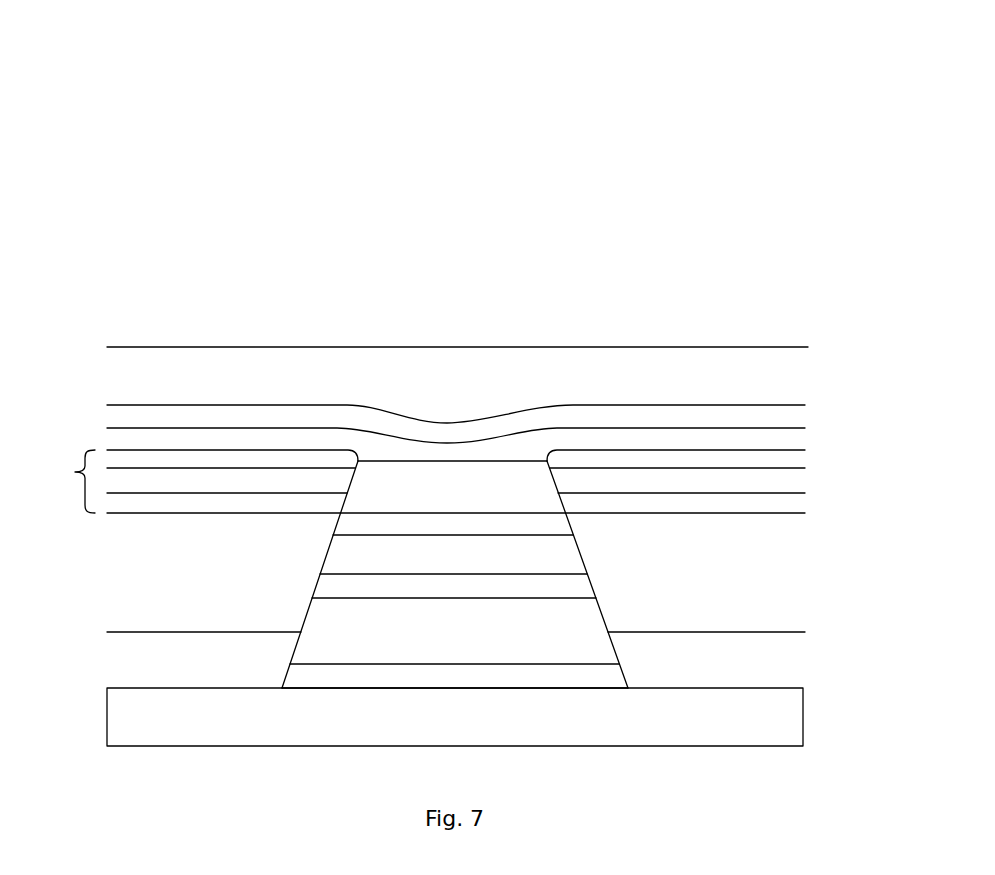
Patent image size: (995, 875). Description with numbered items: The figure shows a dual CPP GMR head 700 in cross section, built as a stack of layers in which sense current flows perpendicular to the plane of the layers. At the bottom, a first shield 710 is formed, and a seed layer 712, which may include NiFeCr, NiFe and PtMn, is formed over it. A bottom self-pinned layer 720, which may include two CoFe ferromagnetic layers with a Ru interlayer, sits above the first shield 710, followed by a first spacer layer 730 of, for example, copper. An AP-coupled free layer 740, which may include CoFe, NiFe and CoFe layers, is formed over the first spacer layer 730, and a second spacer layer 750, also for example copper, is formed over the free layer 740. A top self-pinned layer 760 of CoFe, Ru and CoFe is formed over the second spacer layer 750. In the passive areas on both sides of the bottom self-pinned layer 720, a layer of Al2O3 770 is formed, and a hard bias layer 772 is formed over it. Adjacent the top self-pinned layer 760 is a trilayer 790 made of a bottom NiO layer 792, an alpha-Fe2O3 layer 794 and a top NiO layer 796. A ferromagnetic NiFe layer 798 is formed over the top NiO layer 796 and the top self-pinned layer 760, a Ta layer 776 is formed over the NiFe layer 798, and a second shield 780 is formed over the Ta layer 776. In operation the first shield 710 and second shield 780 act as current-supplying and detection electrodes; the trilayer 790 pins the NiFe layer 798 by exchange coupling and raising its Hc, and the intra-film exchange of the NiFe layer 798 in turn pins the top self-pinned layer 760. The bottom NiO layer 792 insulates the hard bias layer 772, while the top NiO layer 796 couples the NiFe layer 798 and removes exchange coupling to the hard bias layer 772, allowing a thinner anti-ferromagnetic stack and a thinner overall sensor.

The dual CPP GMR head 700 is at (195, 178).
The first shield 710 is at (760, 702).
The seed layer 712 is at (365, 679).
The bottom self-pinned layer 720 is at (543, 647).
The first spacer layer 730 is at (582, 591).
The AP-coupled free layer 740 is at (563, 557).
The second spacer layer 750 is at (553, 523).
The top self-pinned layer 760 is at (495, 478).
The layer of Al2O3 770 is at (153, 657).
The hard bias layer 772 is at (163, 578).
The Ta layer 776 is at (250, 413).
The second shield 780 is at (757, 378).
The trilayer 790 is at (73, 470).
The NiO layer 792 is at (197, 503).
The alpha-Fe2O3 layer 794 is at (147, 477).
The NiO layer 796 is at (182, 452).
The ferromagnetic layer 798 is at (340, 438).